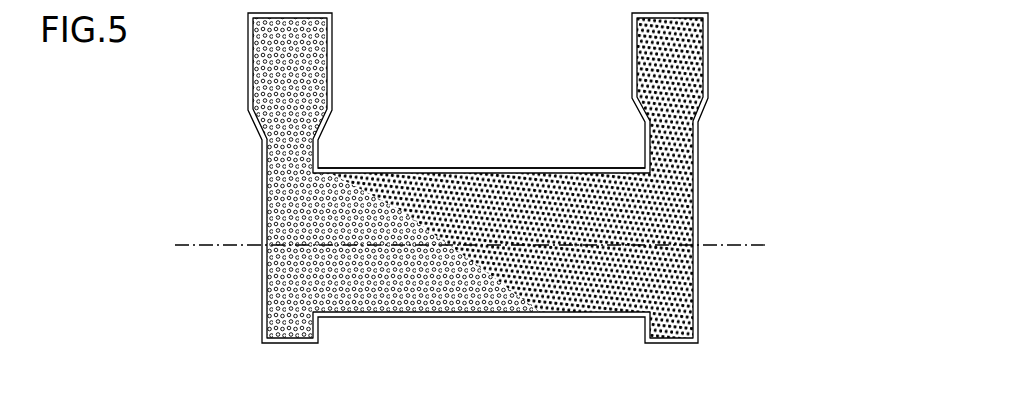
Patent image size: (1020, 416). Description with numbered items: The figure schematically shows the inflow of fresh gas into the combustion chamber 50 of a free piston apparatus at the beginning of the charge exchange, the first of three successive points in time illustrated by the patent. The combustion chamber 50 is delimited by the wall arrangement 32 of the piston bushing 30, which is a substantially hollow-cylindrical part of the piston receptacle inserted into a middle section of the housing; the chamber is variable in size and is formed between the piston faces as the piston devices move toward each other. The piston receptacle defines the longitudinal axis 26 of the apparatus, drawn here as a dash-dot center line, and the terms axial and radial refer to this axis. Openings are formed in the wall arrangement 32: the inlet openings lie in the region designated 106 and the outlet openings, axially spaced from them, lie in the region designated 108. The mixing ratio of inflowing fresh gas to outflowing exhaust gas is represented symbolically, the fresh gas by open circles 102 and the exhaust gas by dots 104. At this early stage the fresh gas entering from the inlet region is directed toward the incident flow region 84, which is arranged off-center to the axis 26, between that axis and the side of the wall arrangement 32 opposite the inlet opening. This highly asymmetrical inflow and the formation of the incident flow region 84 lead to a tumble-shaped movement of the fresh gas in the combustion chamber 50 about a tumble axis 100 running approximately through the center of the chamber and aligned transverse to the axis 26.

The axis 26 is at (737, 245).
The piston bushing 30 is at (406, 170).
The wall arrangement 32 is at (552, 170).
The combustion chamber 50 is at (442, 215).
The incident flow region 84 is at (425, 272).
The tumble axis 100 is at (480, 233).
The open circles 102 is at (280, 90).
The dots 104 is at (668, 58).
The inlet opening region 106 is at (290, 190).
The outlet opening region 108 is at (623, 210).